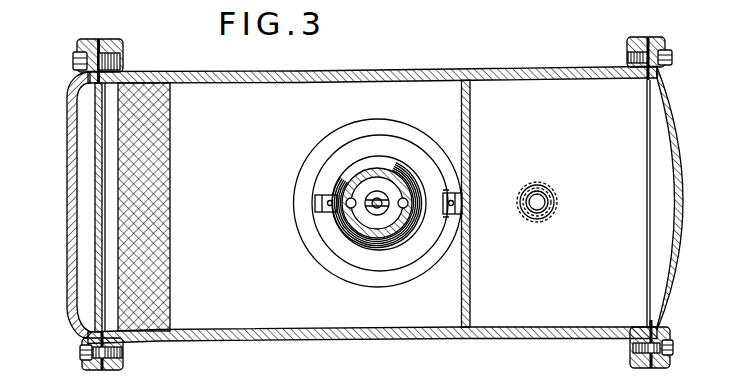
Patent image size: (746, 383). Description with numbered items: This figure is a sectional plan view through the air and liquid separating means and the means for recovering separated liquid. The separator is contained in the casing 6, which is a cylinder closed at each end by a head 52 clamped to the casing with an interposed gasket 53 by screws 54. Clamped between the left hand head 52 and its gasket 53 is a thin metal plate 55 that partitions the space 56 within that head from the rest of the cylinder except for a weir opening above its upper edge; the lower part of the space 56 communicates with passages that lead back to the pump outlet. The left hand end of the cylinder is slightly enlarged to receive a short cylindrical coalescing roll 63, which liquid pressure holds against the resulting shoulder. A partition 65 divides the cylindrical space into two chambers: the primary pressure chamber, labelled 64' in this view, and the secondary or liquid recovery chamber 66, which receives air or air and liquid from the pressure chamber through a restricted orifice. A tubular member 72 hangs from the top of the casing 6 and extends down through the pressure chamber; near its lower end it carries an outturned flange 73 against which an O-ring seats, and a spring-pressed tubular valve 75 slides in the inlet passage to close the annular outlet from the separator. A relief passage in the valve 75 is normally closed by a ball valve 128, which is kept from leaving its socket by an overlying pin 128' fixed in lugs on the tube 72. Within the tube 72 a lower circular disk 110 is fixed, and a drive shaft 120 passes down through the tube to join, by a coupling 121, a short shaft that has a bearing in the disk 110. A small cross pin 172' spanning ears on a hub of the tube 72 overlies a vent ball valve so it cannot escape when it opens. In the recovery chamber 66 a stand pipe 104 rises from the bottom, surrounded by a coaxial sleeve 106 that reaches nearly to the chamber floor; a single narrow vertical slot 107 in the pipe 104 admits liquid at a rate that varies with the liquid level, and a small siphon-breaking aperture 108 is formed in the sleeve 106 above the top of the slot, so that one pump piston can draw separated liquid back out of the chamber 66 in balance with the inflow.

The casing 6 is at (56, 194).
The head 52 is at (53, 165).
The gasket 53 is at (90, 367).
The screws 54 is at (73, 62).
The thin metal plate 55 is at (99, 227).
The space 56 is at (88, 262).
The coalescing roll 63 is at (170, 203).
The chamber 64' is at (219, 172).
The partition 65 is at (470, 108).
The secondary or liquid recovery chamber 66 is at (585, 313).
The tubular member 72 is at (382, 178).
The outturned flange 73 is at (337, 180).
The tubular valve 75 is at (402, 282).
The stand pipe 104 is at (550, 188).
The sleeve 106 is at (560, 202).
The vertical slot 107 is at (538, 216).
The siphon-breaking aperture 108 is at (517, 199).
The lower circular disk 110 is at (358, 214).
The drive shaft 120 is at (373, 210).
The coupling 121 is at (380, 210).
The ball valve 128 is at (482, 188).
The overlying pin 128' is at (484, 200).
The small cross pin 172' is at (295, 206).